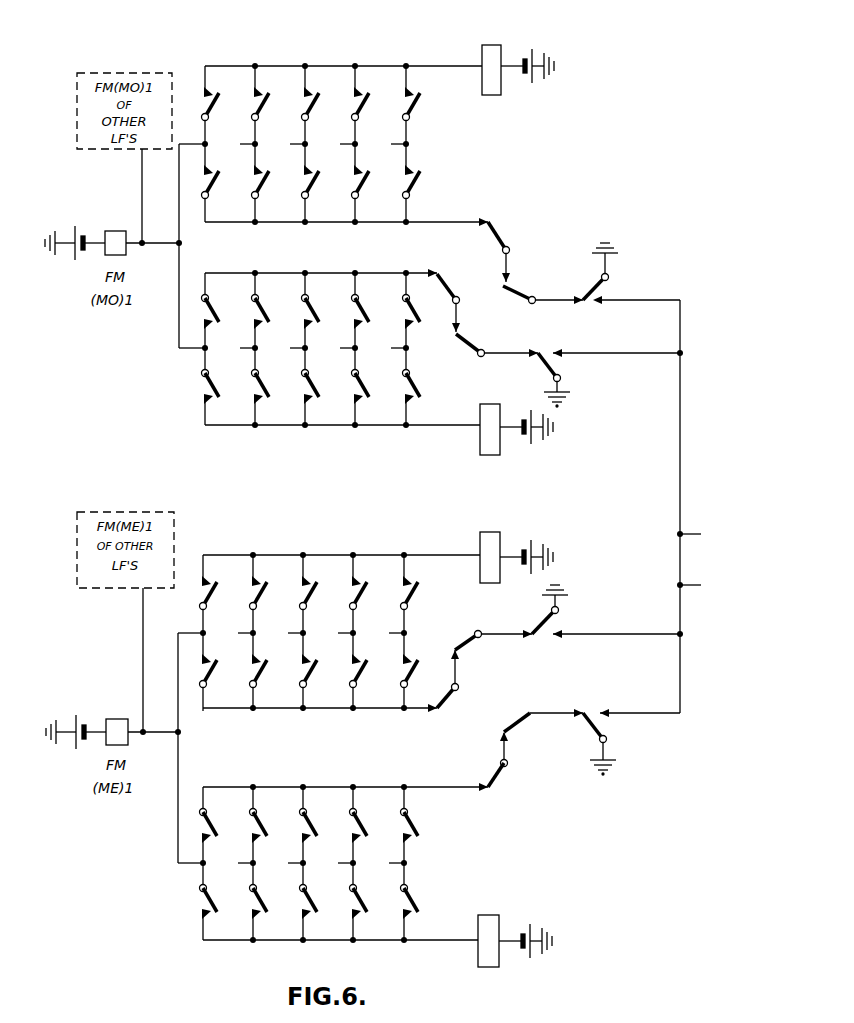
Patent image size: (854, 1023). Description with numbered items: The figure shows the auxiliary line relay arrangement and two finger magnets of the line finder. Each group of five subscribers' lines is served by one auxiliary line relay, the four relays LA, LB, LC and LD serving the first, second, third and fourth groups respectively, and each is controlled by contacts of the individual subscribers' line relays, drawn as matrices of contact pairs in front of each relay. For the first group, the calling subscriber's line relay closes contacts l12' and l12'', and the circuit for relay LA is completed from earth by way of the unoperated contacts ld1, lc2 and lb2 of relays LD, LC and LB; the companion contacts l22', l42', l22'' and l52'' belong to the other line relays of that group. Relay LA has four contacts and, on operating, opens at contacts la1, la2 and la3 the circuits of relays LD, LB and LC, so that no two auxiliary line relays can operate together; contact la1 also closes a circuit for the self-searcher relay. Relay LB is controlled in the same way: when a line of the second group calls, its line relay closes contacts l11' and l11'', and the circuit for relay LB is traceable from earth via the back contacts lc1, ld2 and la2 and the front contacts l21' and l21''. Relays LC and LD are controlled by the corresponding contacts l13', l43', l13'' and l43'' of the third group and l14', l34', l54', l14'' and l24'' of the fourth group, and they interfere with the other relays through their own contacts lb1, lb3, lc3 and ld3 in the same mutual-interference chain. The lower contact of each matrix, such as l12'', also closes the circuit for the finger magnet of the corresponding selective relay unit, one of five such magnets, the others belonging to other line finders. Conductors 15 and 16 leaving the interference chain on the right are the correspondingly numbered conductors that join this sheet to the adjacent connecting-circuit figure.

The line relay contact l12' is at (214, 90).
The line relay contact l22' is at (270, 89).
The line relay contact l42' is at (367, 89).
The line relay contact l12'' is at (217, 199).
The line relay contact l22'' is at (274, 198).
The line relay contact l52'' is at (400, 198).
The line relay contact l11' is at (222, 302).
The line relay front contact l21' is at (276, 311).
The line relay contact l11'' is at (184, 386).
The line relay front contact l21'' is at (240, 401).
The line relay contact l13' is at (218, 576).
The line relay contact l43' is at (370, 576).
The line relay contact l13'' is at (215, 686).
The line relay contact l43'' is at (370, 686).
The line relay contact l14' is at (220, 810).
The line relay contact l34' is at (313, 809).
The line relay contact l54' is at (431, 825).
The line relay contact l14'' is at (183, 901).
The line relay contact l24'' is at (243, 921).
The auxiliary line relay LA is at (469, 90).
The auxiliary line relay LB is at (462, 408).
The auxiliary line relay LC is at (481, 575).
The auxiliary line relay LD is at (462, 903).
The relay LA contact la1 is at (596, 728).
The relay LA contact la2 is at (448, 283).
The relay LA contact la3 is at (463, 700).
The relay contact lb1 is at (536, 640).
The relay LB contact lb2 is at (507, 229).
The relay contact lb3 is at (522, 731).
The relay LC back contact lc1 is at (546, 350).
The relay LC contact lc2 is at (514, 298).
The relay contact lc3 is at (502, 785).
The relay LD contact ld1 is at (598, 292).
The relay LD back contact ld2 is at (474, 348).
The relay contact ld3 is at (472, 651).
The conductor 15 is at (701, 536).
The conductor 16 is at (701, 587).